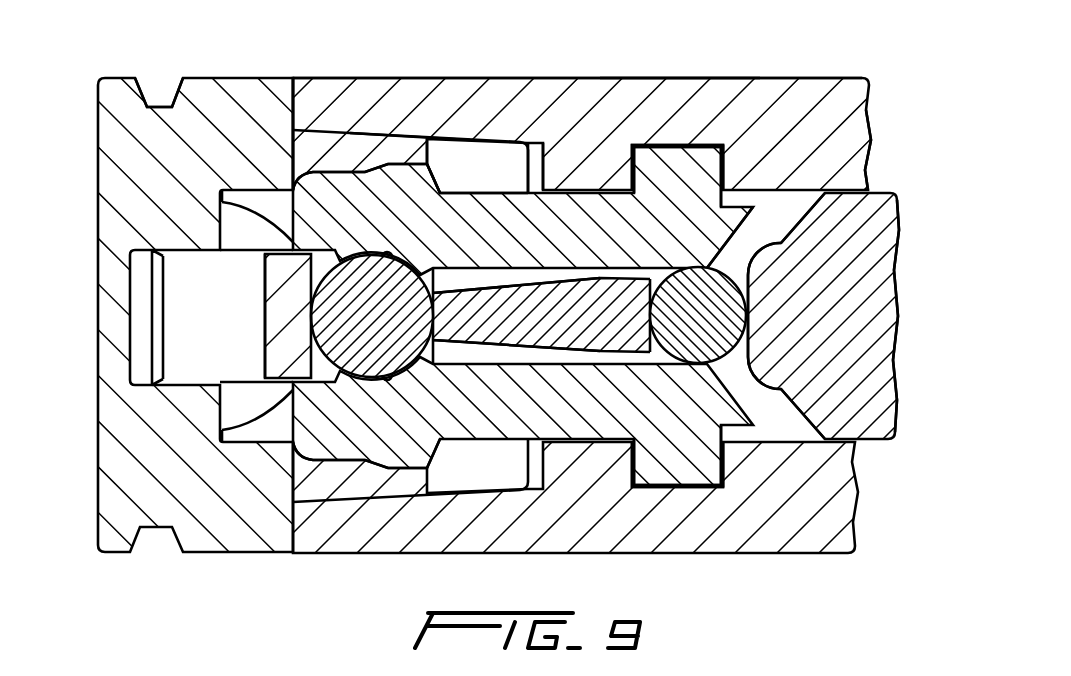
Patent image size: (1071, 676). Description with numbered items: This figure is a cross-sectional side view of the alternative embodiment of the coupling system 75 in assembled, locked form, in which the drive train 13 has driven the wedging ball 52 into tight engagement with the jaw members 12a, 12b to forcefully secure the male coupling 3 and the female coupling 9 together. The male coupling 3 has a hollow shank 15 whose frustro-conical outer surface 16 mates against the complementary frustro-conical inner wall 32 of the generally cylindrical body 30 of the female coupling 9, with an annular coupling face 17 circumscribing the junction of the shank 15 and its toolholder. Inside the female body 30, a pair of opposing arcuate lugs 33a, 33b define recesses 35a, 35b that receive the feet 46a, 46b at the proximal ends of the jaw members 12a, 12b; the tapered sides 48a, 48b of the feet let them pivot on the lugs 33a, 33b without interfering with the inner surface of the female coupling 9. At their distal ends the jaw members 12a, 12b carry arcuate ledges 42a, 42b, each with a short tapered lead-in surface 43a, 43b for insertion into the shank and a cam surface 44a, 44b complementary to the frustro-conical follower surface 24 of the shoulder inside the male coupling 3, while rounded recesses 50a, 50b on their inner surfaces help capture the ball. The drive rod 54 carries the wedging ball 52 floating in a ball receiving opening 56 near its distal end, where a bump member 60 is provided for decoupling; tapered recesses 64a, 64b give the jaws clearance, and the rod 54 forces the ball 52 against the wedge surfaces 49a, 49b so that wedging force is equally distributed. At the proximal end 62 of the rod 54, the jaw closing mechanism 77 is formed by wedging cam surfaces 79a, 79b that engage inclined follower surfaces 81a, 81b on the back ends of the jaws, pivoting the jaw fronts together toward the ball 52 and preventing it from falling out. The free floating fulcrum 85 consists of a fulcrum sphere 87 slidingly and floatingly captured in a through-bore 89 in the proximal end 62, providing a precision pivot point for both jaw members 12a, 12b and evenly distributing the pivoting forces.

The male coupling 3 is at (90, 203).
The female coupling 9 is at (512, 76).
The jaw member 12a is at (602, 251).
The jaw member 12b is at (602, 416).
The drive train 13 is at (899, 314).
The hollow shank 15 is at (496, 178).
The frustro-conical outer surface 16 is at (340, 132).
The annular coupling face 17 is at (295, 112).
The frustro-conical follower surface 24 is at (414, 137).
The cylindrical body 30 is at (695, 120).
The frustro-conical inner wall 32 is at (467, 137).
The arcuate lug 33a is at (580, 170).
The arcuate lug 33b is at (590, 462).
The recess 35a is at (723, 157).
The recess 35b is at (721, 478).
The arcuate ledge 42a is at (372, 134).
The arcuate ledge 42b is at (295, 502).
The tapered lead-in surface 43a is at (296, 172).
The tapered lead-in surface 43b is at (298, 462).
The cam surface 44a is at (452, 195).
The cam surface 44b is at (447, 490).
The foot 46a is at (703, 182).
The foot 46b is at (691, 477).
The tapered side 48a is at (697, 142).
The tapered side 48b is at (695, 493).
The wedge surface 49a is at (400, 236).
The wedge surface 49b is at (390, 380).
The rounded recess 50a is at (220, 199).
The rounded recess 50b is at (220, 433).
The wedging ball 52 is at (387, 329).
The drive rod 54 is at (563, 333).
The ball receiving opening 56 is at (264, 306).
The bump member 60 is at (264, 344).
The proximal end 62 is at (892, 228).
The tapered recess 64a is at (533, 280).
The tapered recess 64b is at (480, 362).
The coupling system 75 is at (143, 72).
The jaw closing mechanism 77 is at (845, 188).
The wedging cam surface 79a is at (787, 205).
The wedging cam surface 79b is at (775, 392).
The inclined follower surface 81a is at (766, 248).
The inclined follower surface 81b is at (770, 370).
The free floating fulcrum 85 is at (693, 254).
The fulcrum sphere 87 is at (713, 324).
The through-bore 89 is at (750, 348).